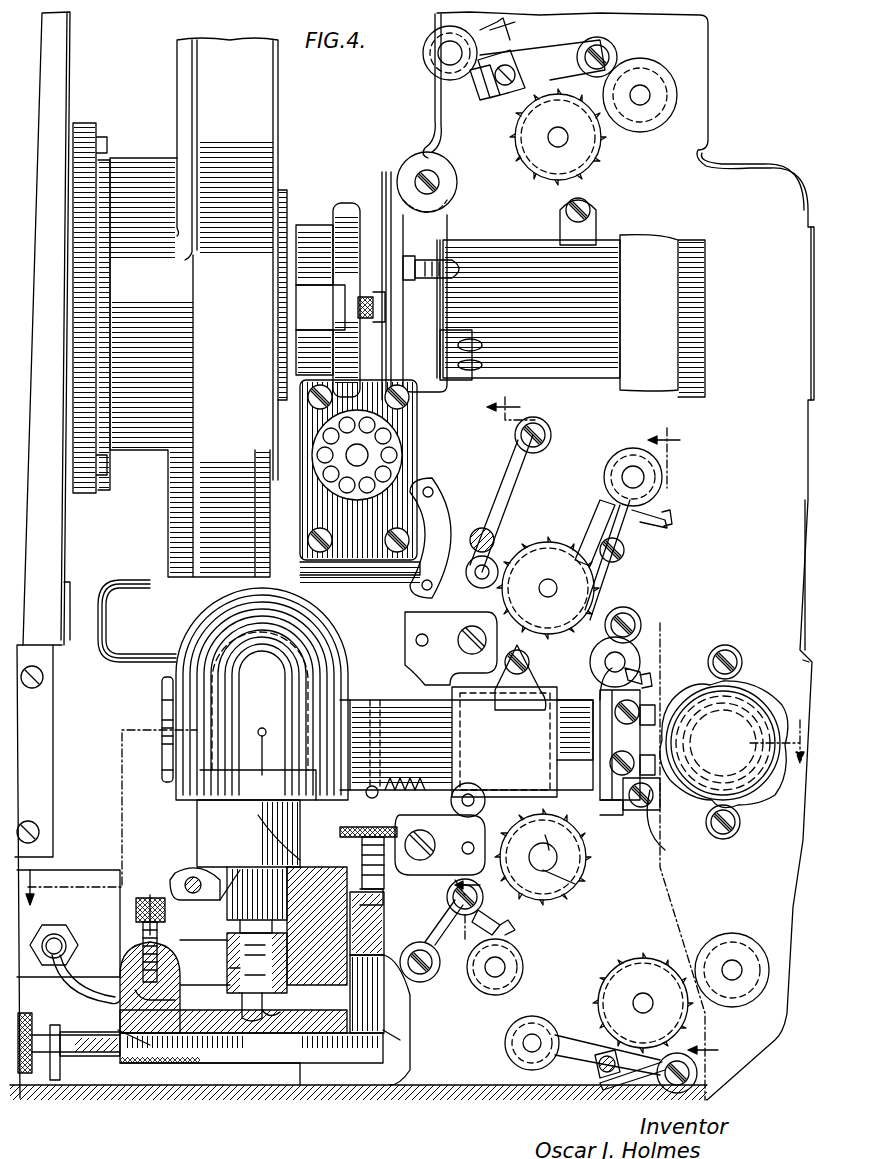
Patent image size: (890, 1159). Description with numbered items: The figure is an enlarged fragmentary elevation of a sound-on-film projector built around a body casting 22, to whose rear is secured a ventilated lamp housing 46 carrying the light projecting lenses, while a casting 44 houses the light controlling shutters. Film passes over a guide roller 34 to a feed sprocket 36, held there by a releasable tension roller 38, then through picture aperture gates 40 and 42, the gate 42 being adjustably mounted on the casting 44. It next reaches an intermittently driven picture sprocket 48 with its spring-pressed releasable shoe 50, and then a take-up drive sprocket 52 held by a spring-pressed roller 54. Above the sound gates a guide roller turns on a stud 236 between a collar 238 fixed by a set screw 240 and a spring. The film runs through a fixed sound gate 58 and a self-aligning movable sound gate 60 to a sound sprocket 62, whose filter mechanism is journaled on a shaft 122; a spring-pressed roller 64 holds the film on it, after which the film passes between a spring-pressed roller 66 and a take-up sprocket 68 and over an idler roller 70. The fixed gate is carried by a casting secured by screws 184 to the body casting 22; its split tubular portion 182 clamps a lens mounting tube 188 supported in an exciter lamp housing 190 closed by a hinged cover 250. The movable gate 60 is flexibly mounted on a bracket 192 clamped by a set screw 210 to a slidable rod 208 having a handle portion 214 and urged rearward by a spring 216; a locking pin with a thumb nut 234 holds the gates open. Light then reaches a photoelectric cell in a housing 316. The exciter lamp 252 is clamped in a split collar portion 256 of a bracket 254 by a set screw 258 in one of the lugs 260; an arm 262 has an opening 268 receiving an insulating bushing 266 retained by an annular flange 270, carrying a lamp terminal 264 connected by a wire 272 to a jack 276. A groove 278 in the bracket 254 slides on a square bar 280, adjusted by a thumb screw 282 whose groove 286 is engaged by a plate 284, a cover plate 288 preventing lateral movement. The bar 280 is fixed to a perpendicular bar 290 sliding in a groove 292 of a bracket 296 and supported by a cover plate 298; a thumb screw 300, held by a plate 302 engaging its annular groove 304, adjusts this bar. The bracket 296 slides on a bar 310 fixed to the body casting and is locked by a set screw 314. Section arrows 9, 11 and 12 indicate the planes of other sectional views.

The body casting 22 is at (765, 185).
The ventilated lamp housing 46 is at (65, 95).
The casting 44 is at (205, 63).
The picture aperture gate 40 is at (407, 308).
The picture aperture gate 42 is at (385, 182).
The releasable tension roller 38 is at (438, 65).
The guide roller 34 is at (663, 100).
The feed sprocket 36 is at (600, 163).
The picture sprocket 48 is at (375, 457).
The spring-pressed releasable shoe 50 is at (445, 512).
The section line 12 is at (504, 667).
The section line 11 is at (700, 762).
The spring-pressed roller 54 is at (650, 480).
The take-up drive sprocket 52 is at (598, 590).
The stud 236 is at (593, 662).
The collar 238 is at (640, 640).
The set screw 240 is at (650, 660).
The housing 316 is at (730, 745).
The section line 9 is at (416, 801).
The hinged cover 250 is at (178, 657).
The exciter lamp housing 190 is at (165, 625).
The exciter lamp 252 is at (210, 686).
The screws 184 is at (460, 630).
The split tubular portion 182 is at (447, 712).
The handle portion 214 is at (372, 785).
The spring 216 is at (410, 775).
The thumb nut 234 is at (480, 790).
The lens mounting tube 188 is at (375, 705).
The bracket 192 is at (640, 700).
The fixed light aperture sound gate 58 is at (605, 808).
The movable light aperture sound gate 60 is at (640, 812).
The set screw 210 is at (660, 845).
The plate 284 is at (400, 822).
The thumb screw 282 is at (415, 820).
The sound sprocket 62 is at (573, 857).
The slidable rod 208 is at (545, 833).
The shaft 122 is at (580, 886).
The split collar portion 256 is at (256, 829).
The set screw 258 is at (230, 859).
The flanges or lugs 260 is at (188, 880).
The set screw 314 is at (150, 890).
The jack 276 is at (72, 928).
The bracket 254 is at (320, 962).
The bar 310 is at (138, 935).
The wire 272 is at (122, 960).
The annular flange 270 is at (240, 925).
The arm or lug 262 is at (228, 950).
The opening 268 is at (238, 970).
The insulating bushing 266 is at (242, 1003).
The lamp terminal 264 is at (287, 1019).
The groove 292 is at (250, 1062).
The cover plate 298 is at (178, 1068).
The bracket 296 is at (150, 1055).
The bar 290 is at (300, 1055).
The thumb screw 300 is at (25, 1075).
The plate 302 is at (55, 1082).
The annular groove 304 is at (65, 1060).
The annular groove 286 is at (375, 885).
The cover plate 288 is at (384, 920).
The square or polygonal bar 280 is at (370, 1028).
The square or polygonal groove 278 is at (400, 980).
The spring-pressed roller 64 is at (525, 960).
The spring-pressed roller 66 is at (540, 1020).
The take-up sprocket 68 is at (640, 968).
The idler roller 70 is at (735, 945).